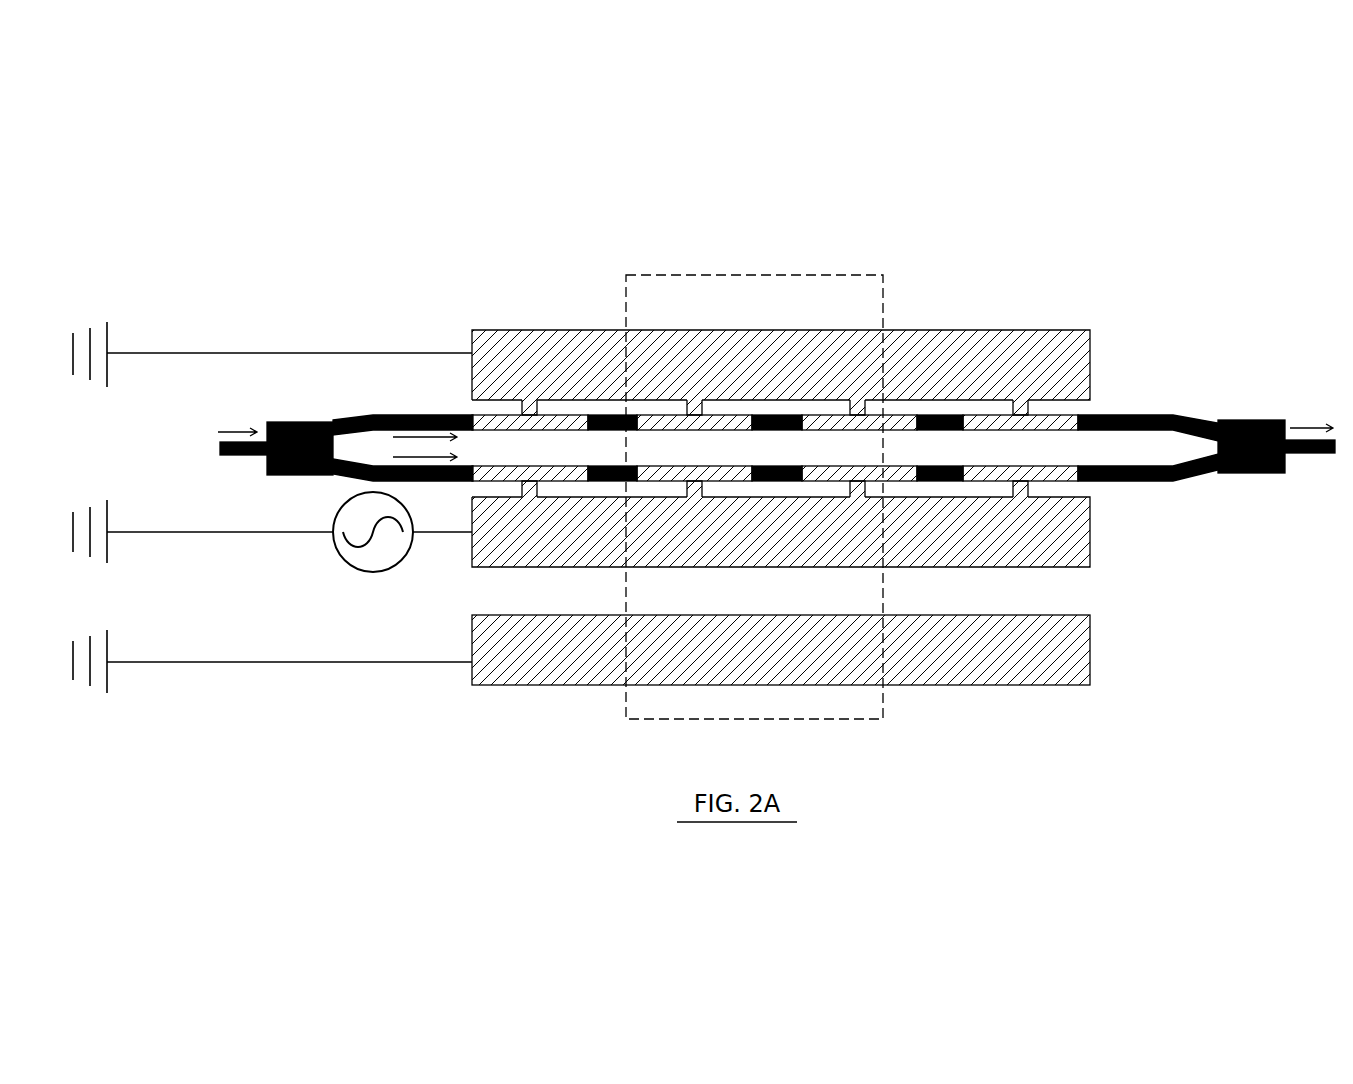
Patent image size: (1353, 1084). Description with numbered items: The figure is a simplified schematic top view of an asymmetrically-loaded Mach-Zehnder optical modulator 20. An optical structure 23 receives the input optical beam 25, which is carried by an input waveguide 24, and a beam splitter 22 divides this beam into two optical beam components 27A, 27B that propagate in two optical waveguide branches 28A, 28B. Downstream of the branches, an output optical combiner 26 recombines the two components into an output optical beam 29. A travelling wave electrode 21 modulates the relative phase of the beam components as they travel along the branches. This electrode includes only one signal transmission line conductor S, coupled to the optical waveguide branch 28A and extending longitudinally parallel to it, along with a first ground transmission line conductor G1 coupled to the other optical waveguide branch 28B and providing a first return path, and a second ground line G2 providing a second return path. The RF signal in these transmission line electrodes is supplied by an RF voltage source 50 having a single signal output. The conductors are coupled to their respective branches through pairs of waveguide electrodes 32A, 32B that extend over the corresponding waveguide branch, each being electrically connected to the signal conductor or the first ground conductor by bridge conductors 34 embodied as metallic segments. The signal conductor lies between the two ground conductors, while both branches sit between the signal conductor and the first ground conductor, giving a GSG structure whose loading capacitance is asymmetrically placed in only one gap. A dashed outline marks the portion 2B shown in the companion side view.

The Mach-Zehnder optical modulator 20 is at (465, 226).
The travelling wave electrode 21 is at (1106, 297).
The beam splitter 22 is at (280, 478).
The optical structure 23 is at (374, 457).
The input waveguide 24 is at (218, 447).
The input optical beam 25 is at (242, 426).
The output optical combiner 26 is at (1250, 475).
The optical beam component 27A is at (412, 436).
The optical beam component 27B is at (432, 460).
The optical waveguide branch 28A is at (1128, 415).
The optical waveguide branch 28B is at (1133, 482).
The output optical beam 29 is at (1305, 425).
The waveguide electrode 32A is at (500, 425).
The waveguide electrode 32B is at (493, 470).
The bridge conductor 34 is at (692, 408).
The RF voltage source 50 is at (347, 560).
The first ground transmission line conductor G1 is at (960, 330).
The second ground line G2 is at (925, 688).
The signal transmission line conductor S is at (1090, 565).
The portion B 2B is at (663, 722).